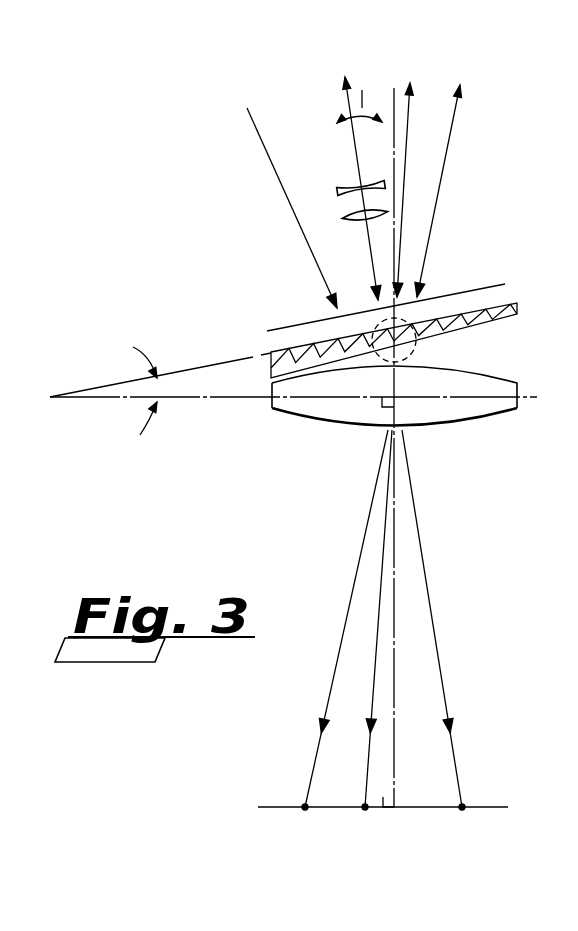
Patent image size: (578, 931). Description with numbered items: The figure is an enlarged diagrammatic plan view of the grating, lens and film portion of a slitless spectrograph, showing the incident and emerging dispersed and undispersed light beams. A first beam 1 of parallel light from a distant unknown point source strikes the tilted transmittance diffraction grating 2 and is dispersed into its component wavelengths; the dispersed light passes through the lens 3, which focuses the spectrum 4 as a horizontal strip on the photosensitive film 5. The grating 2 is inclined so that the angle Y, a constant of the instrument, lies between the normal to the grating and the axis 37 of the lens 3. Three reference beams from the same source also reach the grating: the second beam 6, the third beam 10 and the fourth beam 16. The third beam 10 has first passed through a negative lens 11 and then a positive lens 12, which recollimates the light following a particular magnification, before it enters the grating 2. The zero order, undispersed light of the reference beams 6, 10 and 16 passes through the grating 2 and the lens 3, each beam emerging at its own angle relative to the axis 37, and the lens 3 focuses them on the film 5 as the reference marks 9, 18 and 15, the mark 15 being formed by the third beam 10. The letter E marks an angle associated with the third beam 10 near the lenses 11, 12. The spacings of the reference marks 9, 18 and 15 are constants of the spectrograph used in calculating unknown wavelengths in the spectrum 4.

The first light beam 1 is at (292, 213).
The diffraction grating 2 is at (507, 323).
The lens 3 is at (310, 420).
The spectrum 4 is at (410, 323).
The photosensitive film 5 is at (493, 805).
The second beam 6 is at (440, 173).
The reference mark 9 is at (305, 808).
The third beam 10 is at (347, 103).
The negative lens 11 is at (340, 190).
The positive lens 12 is at (347, 218).
The reference mark 15 is at (462, 808).
The fourth beam 16 is at (408, 145).
The reference mark 18 is at (365, 808).
The lens axis 37 is at (394, 695).
The angle E is at (339, 127).
The angle Y is at (160, 391).